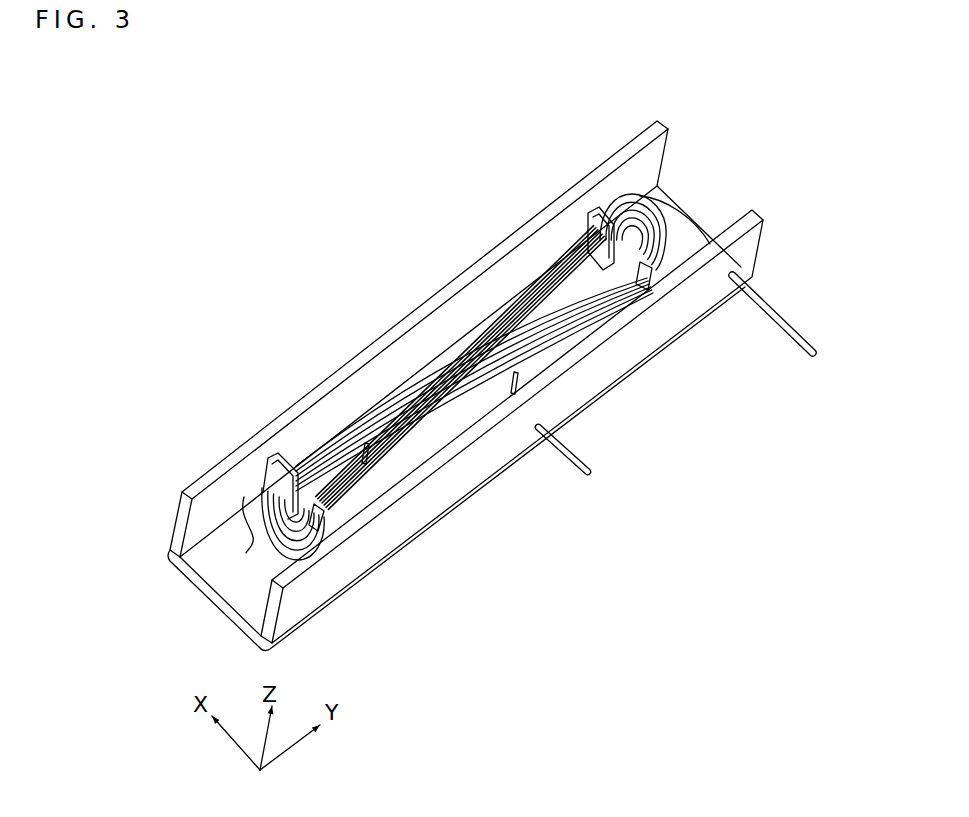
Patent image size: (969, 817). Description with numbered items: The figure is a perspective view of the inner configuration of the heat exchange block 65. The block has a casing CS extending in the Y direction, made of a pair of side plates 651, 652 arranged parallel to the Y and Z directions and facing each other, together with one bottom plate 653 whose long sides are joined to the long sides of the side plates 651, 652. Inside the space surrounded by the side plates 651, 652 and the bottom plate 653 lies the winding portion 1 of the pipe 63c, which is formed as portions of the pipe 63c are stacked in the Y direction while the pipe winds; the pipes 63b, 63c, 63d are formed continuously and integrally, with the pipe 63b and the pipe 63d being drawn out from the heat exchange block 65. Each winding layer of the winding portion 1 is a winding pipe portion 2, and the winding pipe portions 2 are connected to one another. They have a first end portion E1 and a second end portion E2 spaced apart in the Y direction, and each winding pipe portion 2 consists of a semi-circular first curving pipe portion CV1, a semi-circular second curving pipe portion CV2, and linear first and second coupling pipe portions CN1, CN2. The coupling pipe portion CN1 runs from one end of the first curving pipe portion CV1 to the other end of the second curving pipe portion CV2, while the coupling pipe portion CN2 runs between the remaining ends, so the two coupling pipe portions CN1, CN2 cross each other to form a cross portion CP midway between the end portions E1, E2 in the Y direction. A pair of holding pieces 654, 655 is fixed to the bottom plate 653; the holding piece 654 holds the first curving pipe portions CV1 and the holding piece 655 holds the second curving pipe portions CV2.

The heat exchange block 65 is at (228, 318).
The side plate 651 is at (658, 120).
The side plate 652 is at (762, 218).
The bottom plate 653 is at (232, 608).
The holding piece 654 is at (283, 457).
The holding piece 655 is at (600, 207).
The pipe 63b is at (575, 466).
The pipe 63c is at (448, 370).
The pipe 63d is at (778, 313).
The first curving pipe portion CV1 is at (260, 487).
The second curving pipe portion CV2 is at (634, 198).
The first coupling pipe portion CN1 is at (410, 380).
The second coupling pipe portion CN2 is at (433, 423).
The cross portion CP is at (383, 410).
The casing CS is at (618, 359).
The first end portion E1 is at (221, 587).
The second end portion E2 is at (657, 182).
The winding portion 1 is at (180, 553).
The winding pipe portion 2 is at (291, 505).